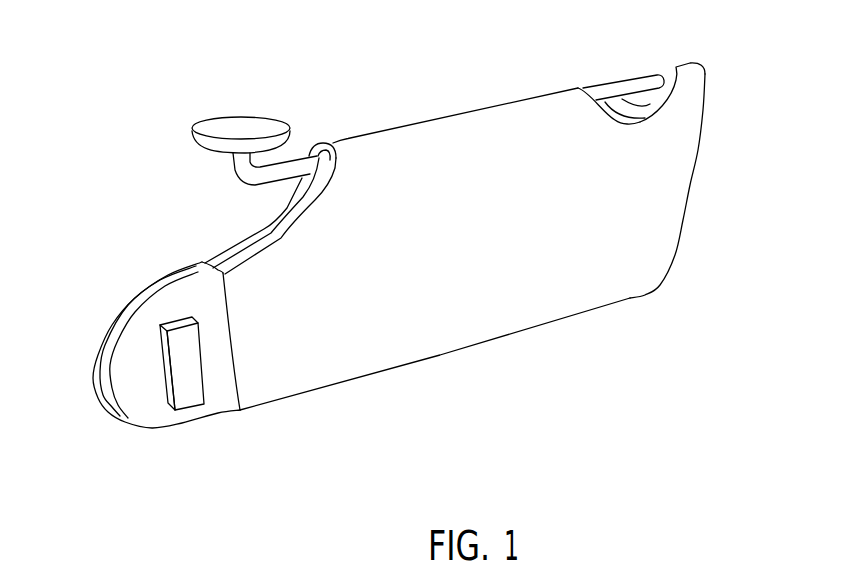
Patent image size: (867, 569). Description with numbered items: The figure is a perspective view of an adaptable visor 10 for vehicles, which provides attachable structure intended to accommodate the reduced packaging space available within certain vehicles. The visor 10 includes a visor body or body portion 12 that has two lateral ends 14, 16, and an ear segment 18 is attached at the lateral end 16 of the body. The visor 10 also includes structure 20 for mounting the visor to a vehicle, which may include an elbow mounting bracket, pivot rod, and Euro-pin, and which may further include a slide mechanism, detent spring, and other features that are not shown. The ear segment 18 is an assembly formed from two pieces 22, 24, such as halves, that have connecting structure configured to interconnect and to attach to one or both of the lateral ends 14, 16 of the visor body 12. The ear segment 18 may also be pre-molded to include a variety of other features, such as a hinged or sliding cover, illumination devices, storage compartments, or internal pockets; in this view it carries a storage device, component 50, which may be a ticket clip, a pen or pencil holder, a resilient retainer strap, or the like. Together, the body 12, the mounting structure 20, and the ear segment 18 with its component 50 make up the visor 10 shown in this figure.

The adaptable visor 10 is at (444, 92).
The visor body 12 is at (488, 263).
The lateral end 14 is at (686, 278).
The lateral end 16 is at (253, 424).
The ear segment 18 is at (102, 296).
The structure for mounting the visor 20 is at (226, 178).
The piece of ear segment 22 is at (107, 390).
The piece of ear segment 24 is at (97, 363).
The storage device component 50 is at (188, 388).